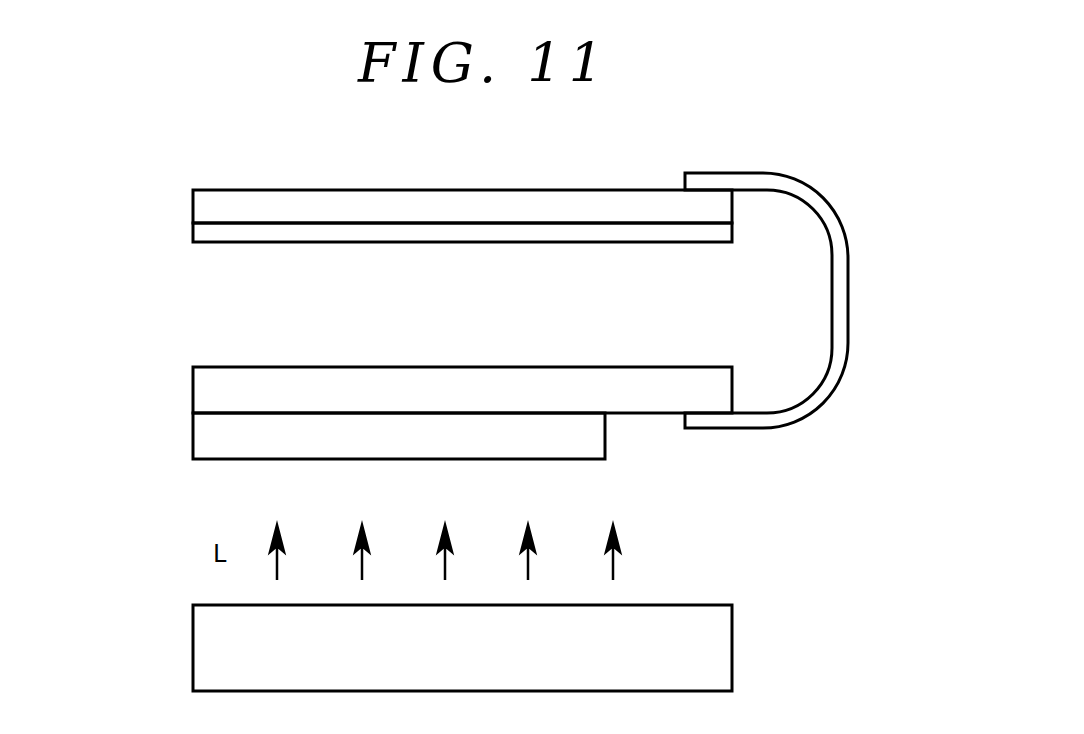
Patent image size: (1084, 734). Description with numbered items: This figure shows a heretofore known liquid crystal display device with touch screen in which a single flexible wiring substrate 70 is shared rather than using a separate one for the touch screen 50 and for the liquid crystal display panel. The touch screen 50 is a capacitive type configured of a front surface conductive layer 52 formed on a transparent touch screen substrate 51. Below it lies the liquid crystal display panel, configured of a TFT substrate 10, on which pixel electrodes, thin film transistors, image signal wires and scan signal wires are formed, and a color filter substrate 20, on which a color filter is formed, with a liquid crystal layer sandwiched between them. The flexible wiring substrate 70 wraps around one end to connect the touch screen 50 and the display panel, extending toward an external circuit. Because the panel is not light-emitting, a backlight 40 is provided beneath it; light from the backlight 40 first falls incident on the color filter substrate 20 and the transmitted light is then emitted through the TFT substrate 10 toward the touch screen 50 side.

The TFT substrate 10 is at (193, 395).
The color filter substrate 20 is at (193, 435).
The backlight 40 is at (193, 652).
The touch screen 50 is at (387, 236).
The touch screen substrate 51 is at (193, 235).
The conductive layer 52 is at (193, 210).
The flexible wiring substrate 70 is at (848, 303).